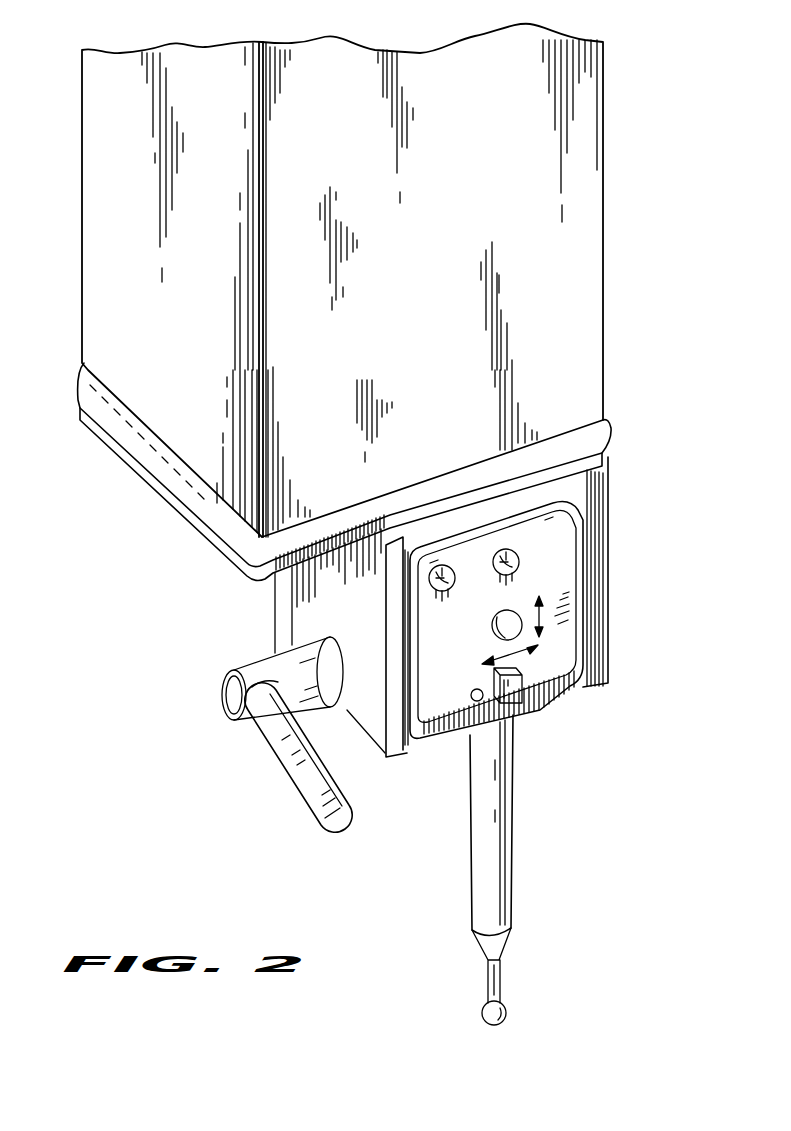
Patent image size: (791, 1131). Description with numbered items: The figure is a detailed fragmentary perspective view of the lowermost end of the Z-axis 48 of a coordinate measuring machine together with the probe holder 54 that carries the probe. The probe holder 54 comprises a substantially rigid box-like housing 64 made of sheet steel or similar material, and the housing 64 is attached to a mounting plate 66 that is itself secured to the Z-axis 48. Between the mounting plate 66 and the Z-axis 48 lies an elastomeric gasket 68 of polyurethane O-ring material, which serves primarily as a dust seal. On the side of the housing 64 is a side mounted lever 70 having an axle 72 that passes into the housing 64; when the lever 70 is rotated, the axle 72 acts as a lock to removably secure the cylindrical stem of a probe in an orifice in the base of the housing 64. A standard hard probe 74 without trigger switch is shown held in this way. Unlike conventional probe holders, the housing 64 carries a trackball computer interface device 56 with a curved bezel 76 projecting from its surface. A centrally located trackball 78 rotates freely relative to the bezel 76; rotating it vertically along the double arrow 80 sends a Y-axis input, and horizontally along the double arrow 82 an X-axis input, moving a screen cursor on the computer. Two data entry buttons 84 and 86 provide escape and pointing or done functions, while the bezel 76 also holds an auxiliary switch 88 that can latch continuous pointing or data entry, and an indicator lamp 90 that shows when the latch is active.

The Z-axis 48 is at (417, 304).
The probe holder 54 is at (632, 491).
The trackball computer interface device 56 is at (570, 573).
The housing 64 is at (600, 687).
The mounting plate 66 is at (605, 455).
The elastomeric gasket 68 is at (613, 423).
The side mounted lever 70 is at (264, 747).
The axle 72 is at (343, 700).
The hard probe 74 is at (513, 843).
The curved bezel 76 is at (570, 643).
The trackball 78 is at (493, 631).
The double arrow 80 is at (575, 609).
The double arrow 82 is at (517, 655).
The data entry button 84 is at (522, 563).
The data entry button 86 is at (455, 586).
The auxiliary switch 88 is at (512, 690).
The indicator lamp 90 is at (470, 695).